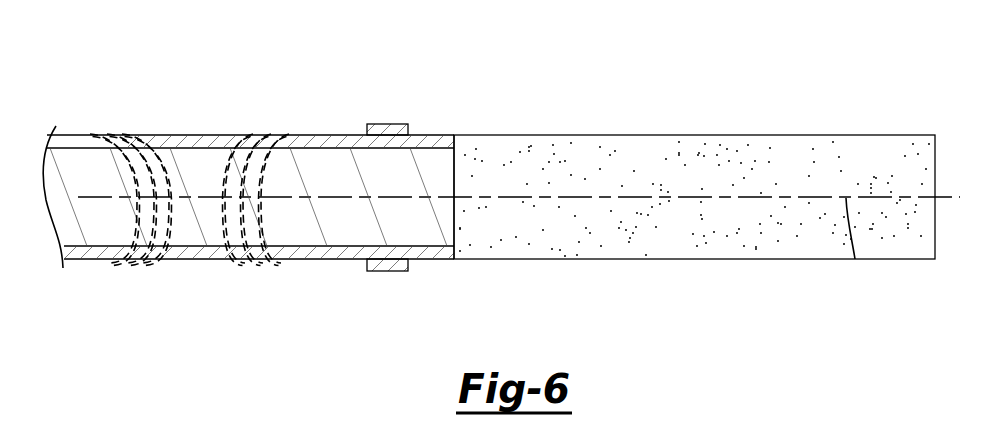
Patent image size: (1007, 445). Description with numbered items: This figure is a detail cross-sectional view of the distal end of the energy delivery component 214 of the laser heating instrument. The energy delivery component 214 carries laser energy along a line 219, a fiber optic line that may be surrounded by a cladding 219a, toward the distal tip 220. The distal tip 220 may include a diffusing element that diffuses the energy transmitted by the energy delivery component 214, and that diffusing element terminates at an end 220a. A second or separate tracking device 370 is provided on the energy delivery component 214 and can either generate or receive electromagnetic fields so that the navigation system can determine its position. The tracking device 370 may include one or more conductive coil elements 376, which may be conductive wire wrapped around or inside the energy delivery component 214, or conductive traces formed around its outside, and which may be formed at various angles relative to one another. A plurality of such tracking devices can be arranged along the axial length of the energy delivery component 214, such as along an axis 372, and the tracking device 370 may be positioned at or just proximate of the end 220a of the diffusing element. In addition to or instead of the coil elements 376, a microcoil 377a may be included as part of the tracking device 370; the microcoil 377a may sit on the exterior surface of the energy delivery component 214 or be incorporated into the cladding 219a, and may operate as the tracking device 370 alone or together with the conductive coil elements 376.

The energy delivery component 214 is at (478, 74).
The line 219 is at (189, 121).
The cladding 219a is at (77, 133).
The distal tip 220 is at (772, 150).
The end of diffusing element 220a is at (454, 217).
The tracking device 370 is at (282, 110).
The axis 372 is at (855, 259).
The conductive coil elements 376 is at (128, 133).
The microcoil 377a is at (384, 126).